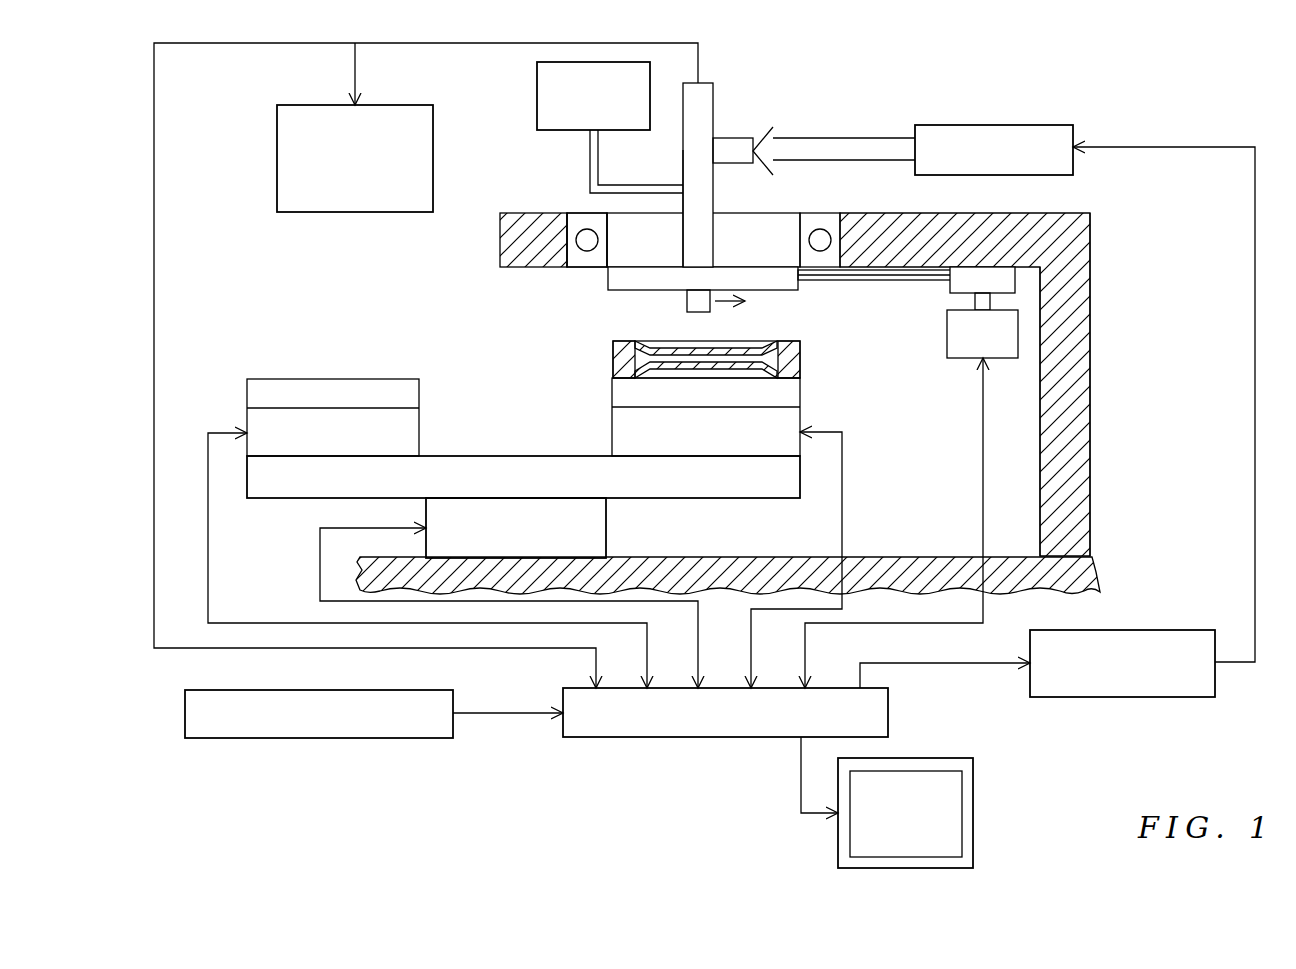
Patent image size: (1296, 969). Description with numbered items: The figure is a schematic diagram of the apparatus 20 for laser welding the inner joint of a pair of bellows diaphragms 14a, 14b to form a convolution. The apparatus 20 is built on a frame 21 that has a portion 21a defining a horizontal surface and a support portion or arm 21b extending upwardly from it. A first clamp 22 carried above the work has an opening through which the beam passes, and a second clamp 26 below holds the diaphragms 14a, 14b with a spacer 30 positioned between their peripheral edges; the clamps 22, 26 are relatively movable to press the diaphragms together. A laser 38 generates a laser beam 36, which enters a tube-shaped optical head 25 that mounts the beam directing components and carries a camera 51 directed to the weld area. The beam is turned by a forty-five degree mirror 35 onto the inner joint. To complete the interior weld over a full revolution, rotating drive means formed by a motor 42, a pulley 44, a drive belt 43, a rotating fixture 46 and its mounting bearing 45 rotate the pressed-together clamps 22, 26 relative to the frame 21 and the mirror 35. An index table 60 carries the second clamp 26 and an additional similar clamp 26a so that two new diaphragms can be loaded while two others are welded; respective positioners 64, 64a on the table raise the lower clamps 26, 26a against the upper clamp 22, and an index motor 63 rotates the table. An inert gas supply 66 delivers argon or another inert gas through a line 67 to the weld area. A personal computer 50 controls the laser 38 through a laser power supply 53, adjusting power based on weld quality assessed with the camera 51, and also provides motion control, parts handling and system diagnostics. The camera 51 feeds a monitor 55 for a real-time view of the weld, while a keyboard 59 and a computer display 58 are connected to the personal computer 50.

The apparatus 20 is at (1092, 78).
The frame 21 is at (768, 403).
The frame portion 21a is at (1078, 583).
The support portion or arm 21b is at (1092, 395).
The first clamp 22 is at (606, 283).
The optical head 25 is at (681, 164).
The second clamp 26 is at (665, 412).
The additional clamp 26a is at (371, 390).
The spacer 30 is at (747, 366).
The first bellows diaphragm 14a is at (733, 343).
The second bellows diaphragm 14b is at (770, 373).
The 45 degree mirror 35 is at (686, 299).
The laser beam 36 is at (822, 135).
The laser 38 is at (985, 125).
The motor 42 is at (1012, 342).
The drive belt 43 is at (905, 283).
The pulley 44 is at (952, 290).
The mounting bearing 45 is at (580, 213).
The rotating fixture 46 is at (750, 213).
The personal computer 50 is at (723, 738).
The camera 51 is at (702, 115).
The laser power supply 53 is at (1138, 698).
The monitor 55 is at (403, 212).
The computer monitor or display 58 is at (975, 815).
The keyboard 59 is at (368, 740).
The index table 60 is at (247, 480).
The index motor 63 is at (606, 526).
The positioner 64 is at (612, 437).
The positioner 64a is at (420, 430).
The inert gas supply 66 is at (537, 105).
The line 67 is at (588, 174).